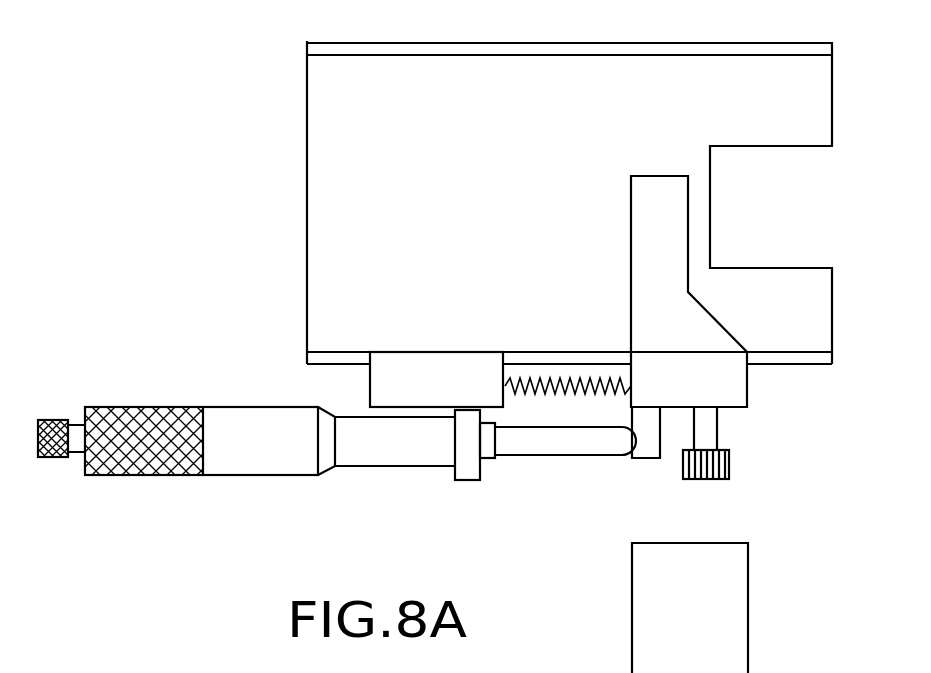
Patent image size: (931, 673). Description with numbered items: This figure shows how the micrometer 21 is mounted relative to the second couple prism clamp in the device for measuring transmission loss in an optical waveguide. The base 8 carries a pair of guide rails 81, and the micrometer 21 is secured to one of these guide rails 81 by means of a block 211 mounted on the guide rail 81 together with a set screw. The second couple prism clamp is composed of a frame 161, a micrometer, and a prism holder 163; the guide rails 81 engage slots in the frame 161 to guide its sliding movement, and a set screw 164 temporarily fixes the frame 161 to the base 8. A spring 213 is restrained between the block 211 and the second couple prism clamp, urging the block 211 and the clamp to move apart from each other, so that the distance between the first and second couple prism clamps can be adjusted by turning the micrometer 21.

The base 8 is at (519, 182).
The guide rails 81 is at (306, 50).
The micrometer 21 is at (337, 417).
The block 211 is at (412, 393).
The spring 213 is at (557, 393).
The frame 161 is at (748, 385).
The prism holder 163 is at (631, 252).
The set screw 164 is at (729, 467).